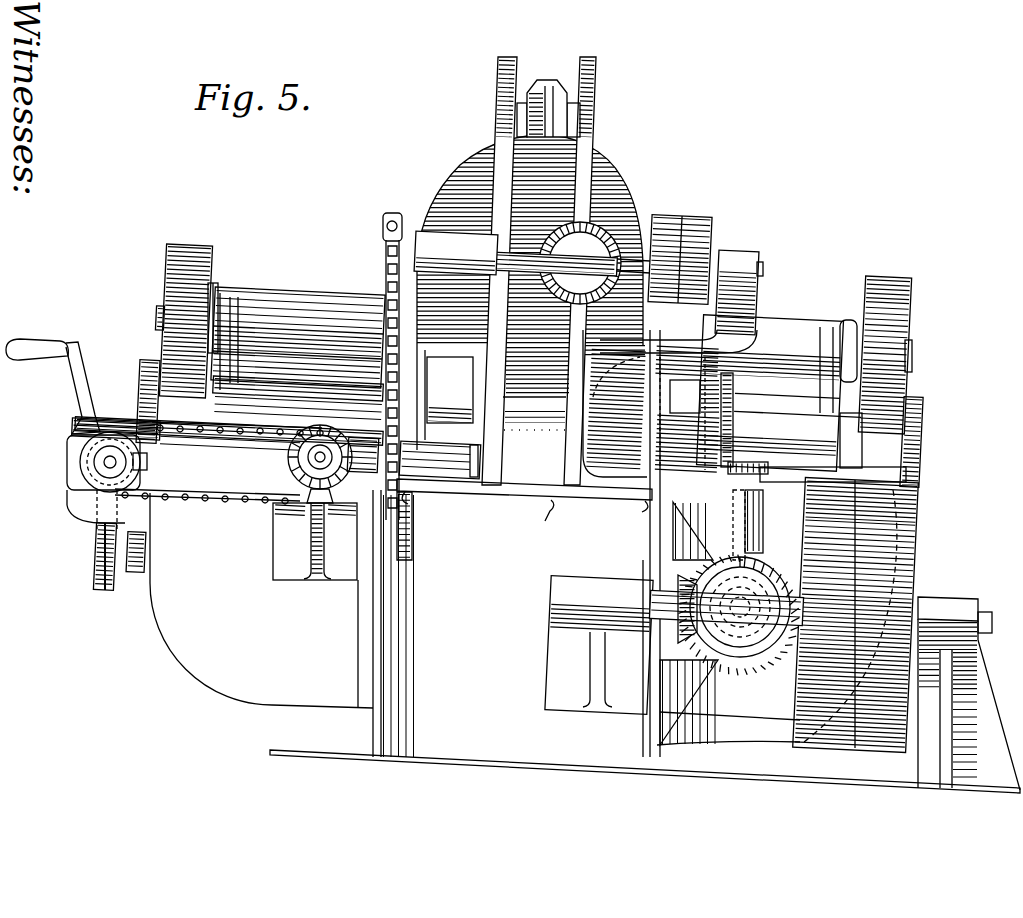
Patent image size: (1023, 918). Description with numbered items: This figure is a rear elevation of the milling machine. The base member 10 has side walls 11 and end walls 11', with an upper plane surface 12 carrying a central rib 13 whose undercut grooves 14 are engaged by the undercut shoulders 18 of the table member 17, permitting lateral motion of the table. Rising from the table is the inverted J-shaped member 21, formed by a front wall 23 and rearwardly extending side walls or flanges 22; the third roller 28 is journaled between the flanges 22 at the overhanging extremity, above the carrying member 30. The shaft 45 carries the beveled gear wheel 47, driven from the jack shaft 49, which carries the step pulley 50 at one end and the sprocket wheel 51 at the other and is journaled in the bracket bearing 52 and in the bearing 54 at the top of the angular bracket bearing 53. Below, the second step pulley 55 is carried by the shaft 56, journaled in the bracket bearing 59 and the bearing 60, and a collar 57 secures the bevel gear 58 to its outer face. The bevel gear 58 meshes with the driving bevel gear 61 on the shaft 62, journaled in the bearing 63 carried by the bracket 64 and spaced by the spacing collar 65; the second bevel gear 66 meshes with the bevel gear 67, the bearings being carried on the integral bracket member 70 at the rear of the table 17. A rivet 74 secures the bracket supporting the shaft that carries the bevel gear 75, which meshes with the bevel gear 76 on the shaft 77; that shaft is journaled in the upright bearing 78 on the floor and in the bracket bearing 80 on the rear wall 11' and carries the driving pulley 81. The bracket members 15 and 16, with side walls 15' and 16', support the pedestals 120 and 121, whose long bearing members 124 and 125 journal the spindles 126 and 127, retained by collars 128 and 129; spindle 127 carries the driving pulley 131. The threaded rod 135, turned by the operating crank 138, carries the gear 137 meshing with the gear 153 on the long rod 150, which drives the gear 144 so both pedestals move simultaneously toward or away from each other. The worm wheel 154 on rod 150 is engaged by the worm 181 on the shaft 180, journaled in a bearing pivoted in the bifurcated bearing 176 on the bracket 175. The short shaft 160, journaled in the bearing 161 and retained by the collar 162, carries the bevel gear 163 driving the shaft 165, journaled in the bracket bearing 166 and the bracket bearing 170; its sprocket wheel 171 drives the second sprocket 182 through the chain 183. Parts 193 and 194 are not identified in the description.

The base member 10 is at (535, 658).
The side walls 11 is at (505, 743).
The end walls 11' is at (500, 725).
The upper plane surface 12 is at (544, 525).
The rib 13 is at (484, 519).
The undercut grooves 14 is at (410, 505).
The bracket member 15 is at (261, 600).
The side walls of bracket 15' is at (201, 583).
The bracket member 16 is at (825, 618).
The side walls of bracket 16' is at (728, 713).
The table member 17 is at (524, 490).
The undercut shoulders 18 is at (525, 497).
The inverted J-shaped member 21 is at (530, 242).
The side walls or flanges 22 is at (578, 178).
The front wall 23 is at (534, 356).
The third roller 28 is at (543, 82).
The carrying member 30 is at (165, 258).
The shaft 45 is at (534, 341).
The beveled gear wheel 47 is at (602, 237).
The jack shaft 49 is at (605, 262).
The step pulley 50 is at (693, 218).
The sprocket wheel 51 is at (386, 240).
The bracket bearing 52 is at (456, 253).
The angular bracket bearing 53 is at (751, 304).
The bearing 54 is at (735, 257).
The second step pulley 55 is at (715, 396).
The shaft 56 is at (530, 403).
The collar 57 is at (727, 405).
The bevel gear 58 is at (734, 411).
The bracket bearing 59 is at (445, 400).
The bearing 60 is at (590, 418).
The driving bevel gear 61 is at (769, 478).
The shaft 62 is at (767, 519).
The bearing 63 is at (766, 503).
The bracket 64 is at (694, 531).
The spacing collar 65 is at (740, 483).
The second bevel gear 66 is at (766, 573).
The bevel gear 67 is at (771, 652).
The integral bracket member 70 is at (666, 528).
The rivet 74 is at (689, 701).
The bevel gear 75 is at (787, 590).
The bevel gear 76 is at (677, 628).
The shaft 77 is at (788, 611).
The upright bearing 78 is at (945, 601).
The bracket bearing 80 is at (599, 645).
The driving pulley 81 is at (881, 595).
The pedestal 120 is at (298, 390).
The pedestal 121 is at (817, 440).
The long bearing member 124 is at (298, 338).
The long bearing member 125 is at (776, 394).
The spindle 126 is at (158, 312).
The spindle 127 is at (912, 358).
The collar 128 is at (214, 295).
The collar 129 is at (860, 324).
The driving pulley 131 is at (898, 320).
The rod 135 is at (97, 418).
The gear 137 is at (148, 362).
The operating crank 138 is at (53, 386).
The gear 144 is at (923, 413).
The long rod 150 is at (118, 582).
The gear 153 is at (140, 546).
The worm wheel 154 is at (95, 560).
The short shaft 160 is at (366, 440).
The bearing 161 is at (440, 460).
The collar 162 is at (474, 457).
The bevel gear 163 is at (332, 541).
The shaft 165 is at (294, 493).
The bracket bearing 166 is at (402, 623).
The bracket bearing 170 is at (296, 507).
The sprocket wheel 171 is at (322, 426).
The bracket 175 is at (142, 525).
The bifurcated bearing 176 is at (72, 486).
The shaft 180 is at (107, 464).
The worm 181 is at (75, 455).
The second sprocket 182 is at (141, 463).
The chain 183 is at (296, 481).
The chain 193 is at (386, 292).
The rail 194 is at (400, 513).